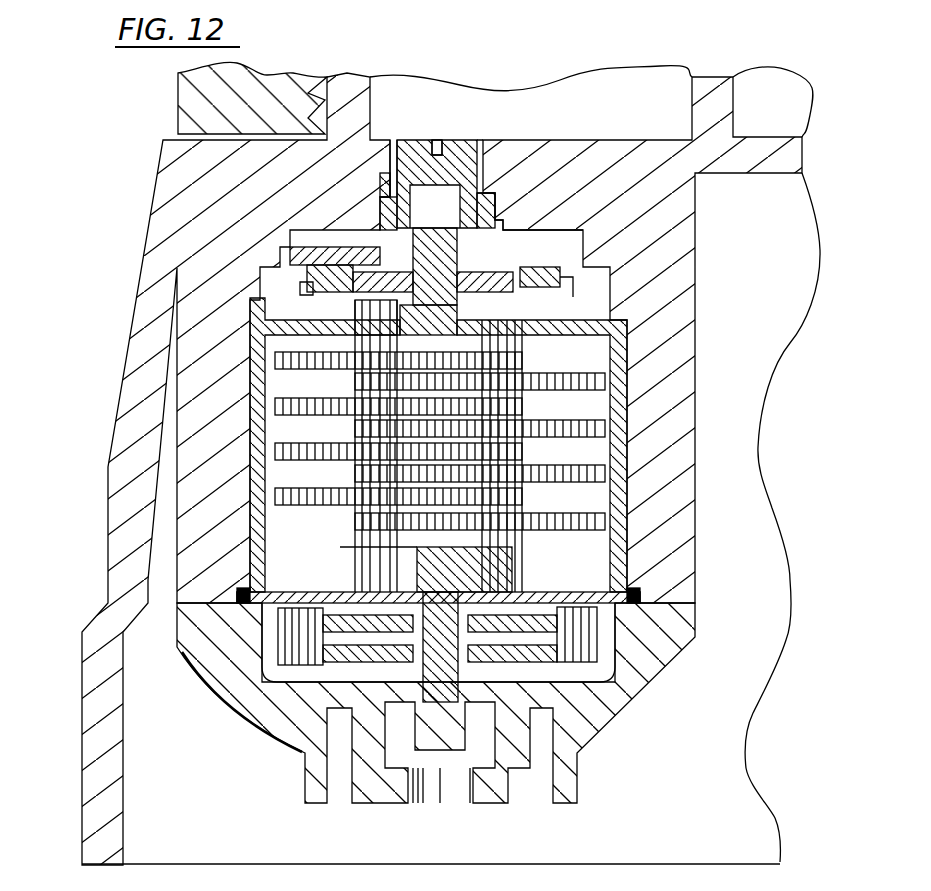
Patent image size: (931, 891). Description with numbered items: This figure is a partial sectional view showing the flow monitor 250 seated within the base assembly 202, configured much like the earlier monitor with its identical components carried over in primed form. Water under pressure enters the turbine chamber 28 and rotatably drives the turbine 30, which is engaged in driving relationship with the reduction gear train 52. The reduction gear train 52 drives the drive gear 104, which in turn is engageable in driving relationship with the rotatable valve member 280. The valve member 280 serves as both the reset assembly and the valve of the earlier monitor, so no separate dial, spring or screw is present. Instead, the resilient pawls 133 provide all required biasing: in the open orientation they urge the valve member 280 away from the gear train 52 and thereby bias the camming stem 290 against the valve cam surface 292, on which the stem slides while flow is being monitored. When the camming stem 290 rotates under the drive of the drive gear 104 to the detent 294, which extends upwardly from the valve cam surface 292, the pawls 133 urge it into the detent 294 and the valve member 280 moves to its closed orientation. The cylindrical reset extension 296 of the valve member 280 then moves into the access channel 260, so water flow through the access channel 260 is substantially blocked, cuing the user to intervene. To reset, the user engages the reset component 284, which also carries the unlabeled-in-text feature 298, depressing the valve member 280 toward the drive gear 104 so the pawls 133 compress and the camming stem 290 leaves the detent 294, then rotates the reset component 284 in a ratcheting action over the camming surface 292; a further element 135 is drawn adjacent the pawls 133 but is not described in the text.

The base assembly 202 is at (120, 400).
The flow monitor 250 is at (695, 468).
The access channel 260 is at (483, 197).
The reset component 284 is at (412, 140).
The cylindrical reset extension 296 is at (390, 157).
The bore 298 is at (436, 147).
The valve cam surface 292 is at (497, 173).
The detent 294 is at (380, 182).
The camming stem 290 is at (380, 206).
The valve member 280 is at (372, 240).
The seal 135 is at (333, 277).
The resilient pawls 133 is at (560, 277).
The drive gear 104 is at (560, 318).
The reduction gear train 52 is at (588, 413).
The turbine chamber 28 is at (554, 672).
The turbine 30 is at (580, 655).